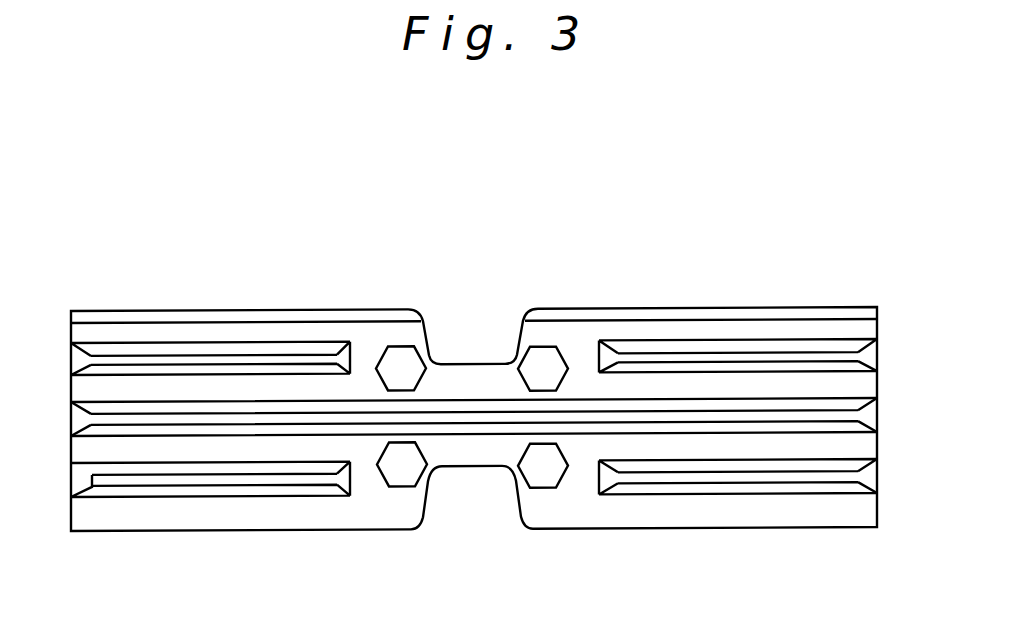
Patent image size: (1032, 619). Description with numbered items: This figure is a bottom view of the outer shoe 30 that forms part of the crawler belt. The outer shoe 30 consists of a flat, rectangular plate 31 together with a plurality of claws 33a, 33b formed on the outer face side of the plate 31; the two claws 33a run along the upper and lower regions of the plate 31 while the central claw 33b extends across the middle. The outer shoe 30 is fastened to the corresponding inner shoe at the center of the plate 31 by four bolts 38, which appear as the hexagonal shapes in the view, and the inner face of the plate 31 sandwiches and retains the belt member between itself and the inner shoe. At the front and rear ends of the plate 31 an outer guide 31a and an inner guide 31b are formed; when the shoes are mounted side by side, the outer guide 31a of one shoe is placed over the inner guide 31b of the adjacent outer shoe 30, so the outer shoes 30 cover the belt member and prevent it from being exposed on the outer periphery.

The outer shoe 30 is at (716, 301).
The plate 31 is at (585, 503).
The outer guide 31a is at (214, 513).
The inner guide 31b is at (262, 322).
The claw 33a is at (832, 350).
The claw 33b is at (835, 412).
The bolt 38 is at (402, 355).